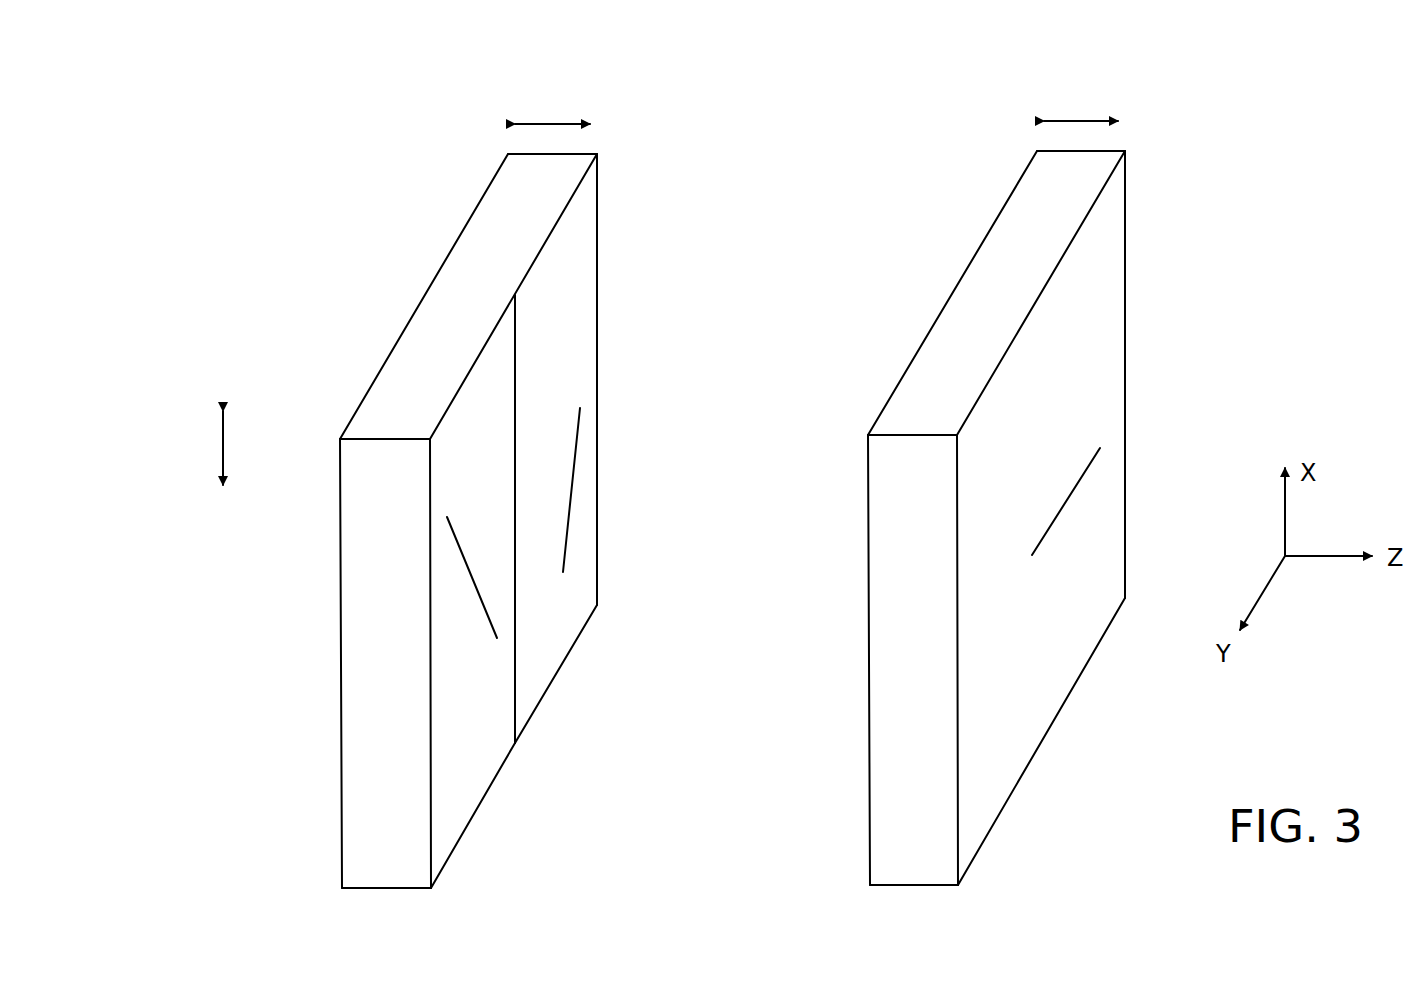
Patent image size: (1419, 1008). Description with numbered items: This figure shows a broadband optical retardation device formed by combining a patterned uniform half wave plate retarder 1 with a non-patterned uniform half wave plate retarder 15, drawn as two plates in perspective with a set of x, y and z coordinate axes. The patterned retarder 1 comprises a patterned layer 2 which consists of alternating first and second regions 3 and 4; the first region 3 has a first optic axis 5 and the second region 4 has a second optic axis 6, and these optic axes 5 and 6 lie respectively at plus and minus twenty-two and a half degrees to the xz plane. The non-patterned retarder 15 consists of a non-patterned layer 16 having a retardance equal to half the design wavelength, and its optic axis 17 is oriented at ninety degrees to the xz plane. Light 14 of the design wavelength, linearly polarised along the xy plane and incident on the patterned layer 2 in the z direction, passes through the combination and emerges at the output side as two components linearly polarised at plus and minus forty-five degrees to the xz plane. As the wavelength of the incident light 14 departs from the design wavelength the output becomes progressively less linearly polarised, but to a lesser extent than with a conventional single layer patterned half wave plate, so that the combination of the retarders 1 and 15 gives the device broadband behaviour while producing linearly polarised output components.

The patterned uniform half wave plate retarder 1 is at (472, 482).
The patterned layer 2 is at (380, 802).
The first region 3 is at (558, 627).
The second region 4 is at (472, 785).
The first optic axis 5 is at (575, 495).
The second optic axis 6 is at (468, 575).
The light 14 is at (220, 450).
The non-patterned uniform half wave plate retarder 15 is at (1068, 479).
The non-patterned layer 16 is at (1035, 702).
The optic axis 17 is at (1057, 515).